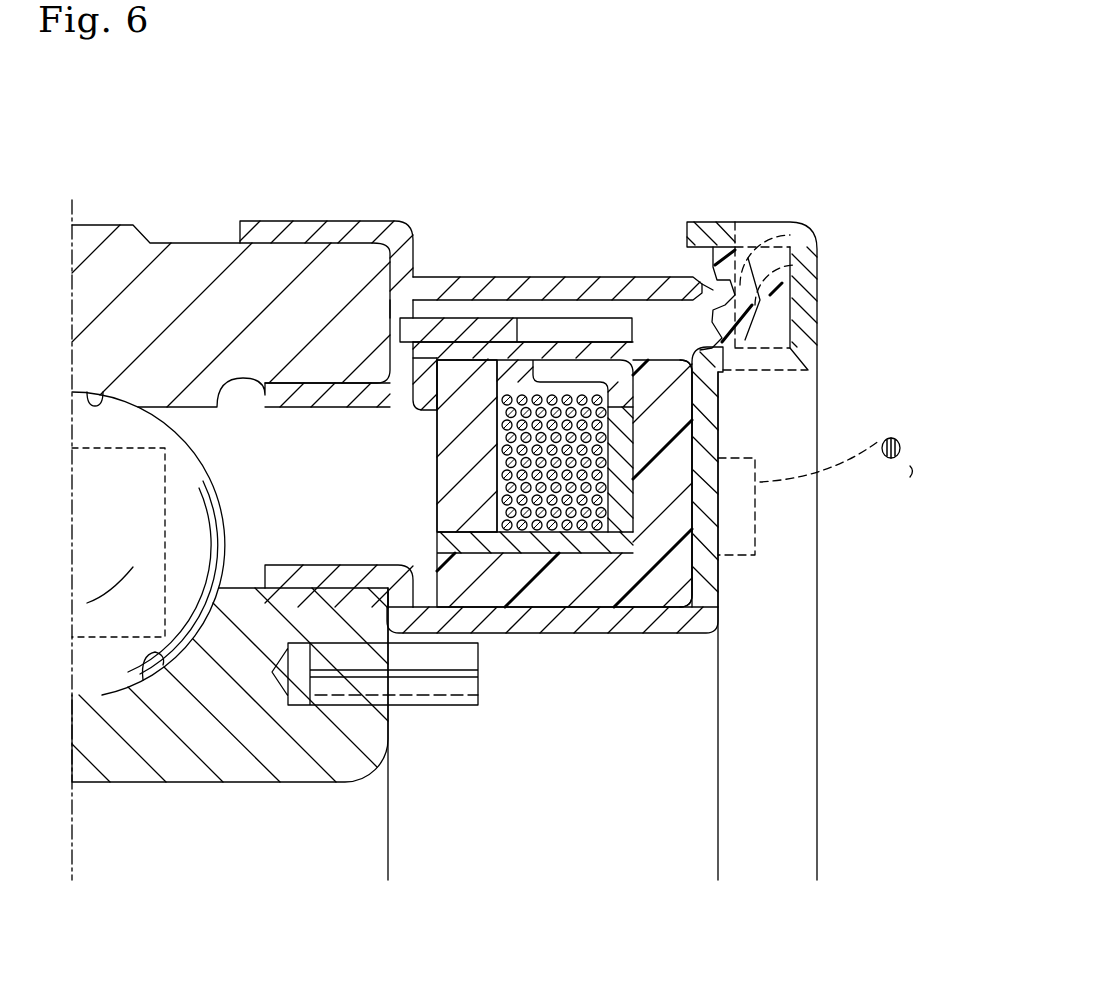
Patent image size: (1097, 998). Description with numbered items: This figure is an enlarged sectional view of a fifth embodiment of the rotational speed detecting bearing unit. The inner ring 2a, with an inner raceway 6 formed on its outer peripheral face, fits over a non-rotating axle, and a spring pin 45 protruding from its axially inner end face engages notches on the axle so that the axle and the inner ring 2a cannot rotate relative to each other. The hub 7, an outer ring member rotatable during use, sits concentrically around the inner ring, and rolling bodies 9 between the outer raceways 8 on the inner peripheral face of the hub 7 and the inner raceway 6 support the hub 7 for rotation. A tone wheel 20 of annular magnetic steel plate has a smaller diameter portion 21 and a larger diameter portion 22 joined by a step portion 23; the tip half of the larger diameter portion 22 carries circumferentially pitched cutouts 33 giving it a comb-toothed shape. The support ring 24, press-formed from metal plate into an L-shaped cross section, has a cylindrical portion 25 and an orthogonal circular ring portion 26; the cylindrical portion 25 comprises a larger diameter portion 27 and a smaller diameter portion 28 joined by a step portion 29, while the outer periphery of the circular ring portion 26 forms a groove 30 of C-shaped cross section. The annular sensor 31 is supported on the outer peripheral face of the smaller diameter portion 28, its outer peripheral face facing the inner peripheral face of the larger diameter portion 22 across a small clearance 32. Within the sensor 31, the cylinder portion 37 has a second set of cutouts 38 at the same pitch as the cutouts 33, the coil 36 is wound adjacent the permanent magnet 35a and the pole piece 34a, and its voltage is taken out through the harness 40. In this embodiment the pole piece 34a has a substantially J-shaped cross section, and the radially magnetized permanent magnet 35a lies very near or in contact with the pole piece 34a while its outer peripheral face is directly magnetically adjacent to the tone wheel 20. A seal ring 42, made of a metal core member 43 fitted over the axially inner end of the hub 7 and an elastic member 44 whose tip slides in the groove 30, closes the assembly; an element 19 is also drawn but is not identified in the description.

The hub 7 is at (158, 273).
The outer raceways 8 is at (88, 388).
The annular member or core member 43 is at (263, 233).
The smaller diameter portion 21 is at (313, 402).
The larger diameter portion 22 is at (470, 330).
The seal ring 42 is at (537, 350).
The tone wheel 20 is at (442, 333).
The step portion 23 is at (389, 358).
The permanent magnet 35a is at (457, 465).
The cutouts 33 is at (592, 332).
The small clearance 32 is at (553, 383).
The cylinder portion 37 is at (593, 370).
The cutouts 38 is at (618, 373).
The sensor 31 is at (521, 578).
The smaller diameter portion 28 is at (620, 625).
The pole piece 34a is at (617, 467).
The coil 36 is at (700, 557).
The circular ring portion 26 is at (700, 493).
The cylindrical portion 25 is at (570, 622).
The support ring 24 is at (690, 628).
The groove 30 is at (813, 243).
The elastic member 44 is at (740, 272).
The harness 40 is at (760, 533).
The rolling bodies 9 is at (108, 672).
The inner raceway 6 is at (143, 680).
The lower body 19 is at (208, 600).
The inner ring 2a is at (297, 755).
The larger diameter portion 27 is at (320, 580).
The step portion 29 is at (388, 595).
The spring pin 45 is at (440, 695).